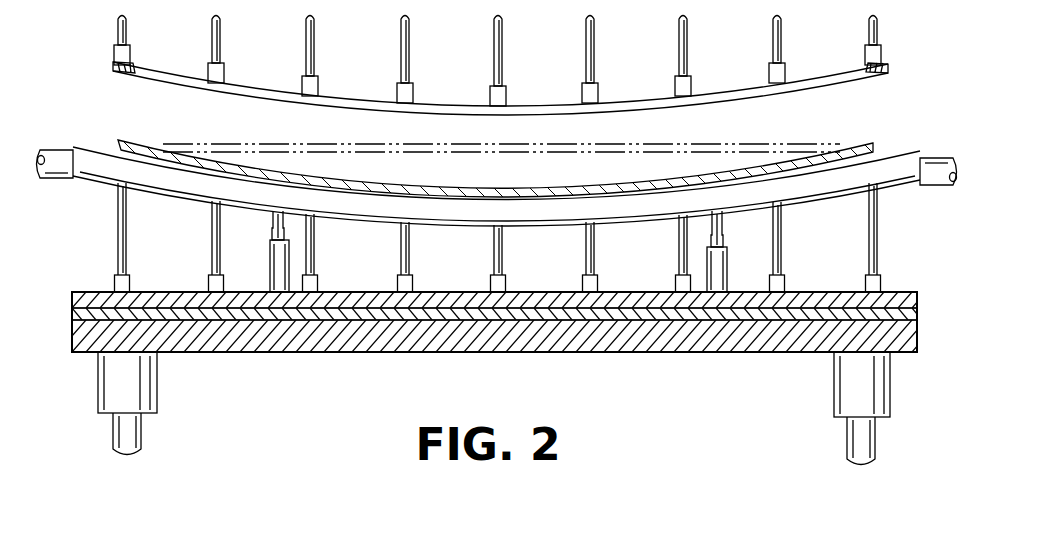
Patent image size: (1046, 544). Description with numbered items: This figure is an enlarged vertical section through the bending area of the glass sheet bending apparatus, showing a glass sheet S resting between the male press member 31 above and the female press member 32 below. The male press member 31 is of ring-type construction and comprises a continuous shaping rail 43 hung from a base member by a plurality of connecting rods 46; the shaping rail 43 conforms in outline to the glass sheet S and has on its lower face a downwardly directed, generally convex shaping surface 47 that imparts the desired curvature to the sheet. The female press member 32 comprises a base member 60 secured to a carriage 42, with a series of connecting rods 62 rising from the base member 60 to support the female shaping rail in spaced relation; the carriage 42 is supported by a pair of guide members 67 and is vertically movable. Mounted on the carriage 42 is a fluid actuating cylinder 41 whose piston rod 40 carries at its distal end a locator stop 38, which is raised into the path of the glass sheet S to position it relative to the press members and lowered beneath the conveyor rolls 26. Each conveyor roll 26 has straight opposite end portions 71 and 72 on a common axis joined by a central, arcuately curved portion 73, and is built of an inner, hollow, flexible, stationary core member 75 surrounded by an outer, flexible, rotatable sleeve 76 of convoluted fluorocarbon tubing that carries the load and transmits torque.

The male press member 31 is at (528, 63).
The shaping rail 43 is at (500, 82).
The connecting rods 46 is at (402, 62).
The shaping surface 47 is at (126, 75).
The sleeve 76 is at (103, 148).
The core member 75 is at (58, 155).
The end portion 71 is at (83, 173).
The conveyor rolls 26 is at (495, 161).
The end portion 72 is at (908, 162).
The glass sheet S is at (788, 160).
The curved portion 73 is at (483, 210).
The connecting rods 62 is at (212, 243).
The piston rod 40 is at (493, 231).
The locator stops 38 is at (284, 222).
The fluid actuating cylinder 41 is at (270, 258).
The base member 60 is at (455, 297).
The carriage 42 is at (494, 321).
The guide members 67 is at (135, 432).
The female press member 32 is at (512, 324).